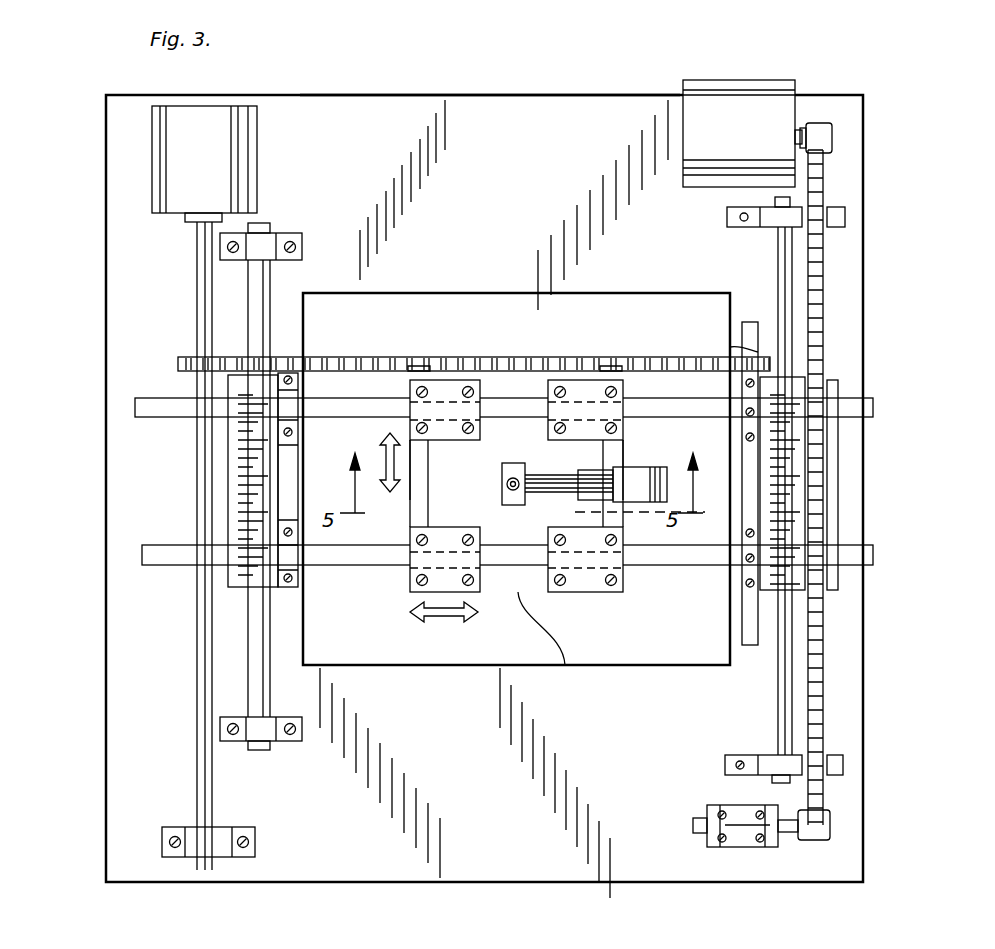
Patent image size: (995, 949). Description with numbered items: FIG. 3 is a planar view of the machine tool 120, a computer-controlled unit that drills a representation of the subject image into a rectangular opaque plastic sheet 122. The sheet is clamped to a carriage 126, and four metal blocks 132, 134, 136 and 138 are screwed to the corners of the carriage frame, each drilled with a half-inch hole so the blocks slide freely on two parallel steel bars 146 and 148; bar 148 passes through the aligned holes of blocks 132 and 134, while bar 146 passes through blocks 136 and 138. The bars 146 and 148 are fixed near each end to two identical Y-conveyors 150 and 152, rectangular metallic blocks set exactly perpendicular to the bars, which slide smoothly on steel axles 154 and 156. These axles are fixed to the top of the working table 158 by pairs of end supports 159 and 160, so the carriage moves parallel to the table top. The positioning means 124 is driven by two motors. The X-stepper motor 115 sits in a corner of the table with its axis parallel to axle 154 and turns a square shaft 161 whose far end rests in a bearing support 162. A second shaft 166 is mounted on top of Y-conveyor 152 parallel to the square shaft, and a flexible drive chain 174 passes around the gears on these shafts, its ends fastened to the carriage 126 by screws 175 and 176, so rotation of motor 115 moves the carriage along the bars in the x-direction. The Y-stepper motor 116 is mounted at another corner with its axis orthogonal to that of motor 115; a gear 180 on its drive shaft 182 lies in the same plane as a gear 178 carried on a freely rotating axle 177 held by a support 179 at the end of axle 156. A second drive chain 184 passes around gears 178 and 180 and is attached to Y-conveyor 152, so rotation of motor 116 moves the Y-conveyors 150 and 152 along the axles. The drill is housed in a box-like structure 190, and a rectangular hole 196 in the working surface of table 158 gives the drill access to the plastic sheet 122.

The X-stepper motor 115 is at (232, 118).
The Y-stepper motor 116 is at (698, 100).
The machine tool 120 is at (640, 96).
The plastic sheet 122 is at (420, 510).
The positioning means 124 is at (828, 702).
The carriage 126 is at (596, 590).
The metal block 132 is at (425, 403).
The metal block 134 is at (605, 415).
The metal block 136 is at (420, 575).
The metal block 138 is at (598, 565).
The steel bar 146 is at (155, 405).
The steel bar 148 is at (175, 530).
The Y-conveyor 150 is at (235, 583).
The Y-conveyor 152 is at (840, 477).
The steel axle 154 is at (268, 285).
The steel axle 156 is at (782, 240).
The working table 158 is at (106, 860).
The end supports 159 is at (298, 242).
The end supports 160 is at (840, 218).
The square shaft 161 is at (222, 857).
The support 162 is at (180, 857).
The second shaft 166 is at (750, 320).
The flexible drive chain 174 is at (734, 346).
The screw 175 is at (420, 375).
The screw 176 is at (615, 378).
The axle 177 is at (742, 850).
The gear 178 is at (832, 825).
The support 179 is at (778, 845).
The gear 180 is at (838, 138).
The drive shaft 182 is at (798, 133).
The second drive chain 184 is at (822, 185).
The box-like structure 190 is at (862, 610).
The rectangular hole 196 is at (456, 665).